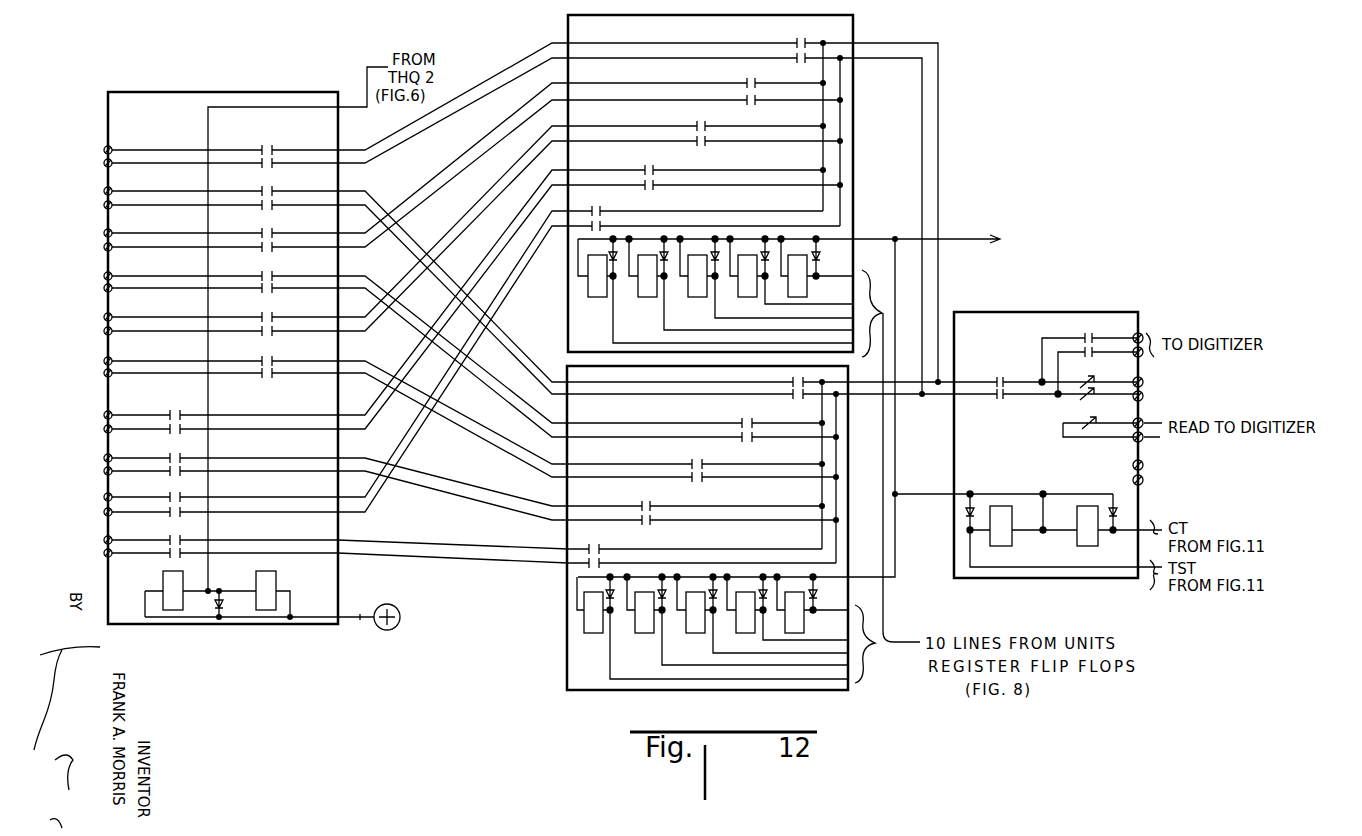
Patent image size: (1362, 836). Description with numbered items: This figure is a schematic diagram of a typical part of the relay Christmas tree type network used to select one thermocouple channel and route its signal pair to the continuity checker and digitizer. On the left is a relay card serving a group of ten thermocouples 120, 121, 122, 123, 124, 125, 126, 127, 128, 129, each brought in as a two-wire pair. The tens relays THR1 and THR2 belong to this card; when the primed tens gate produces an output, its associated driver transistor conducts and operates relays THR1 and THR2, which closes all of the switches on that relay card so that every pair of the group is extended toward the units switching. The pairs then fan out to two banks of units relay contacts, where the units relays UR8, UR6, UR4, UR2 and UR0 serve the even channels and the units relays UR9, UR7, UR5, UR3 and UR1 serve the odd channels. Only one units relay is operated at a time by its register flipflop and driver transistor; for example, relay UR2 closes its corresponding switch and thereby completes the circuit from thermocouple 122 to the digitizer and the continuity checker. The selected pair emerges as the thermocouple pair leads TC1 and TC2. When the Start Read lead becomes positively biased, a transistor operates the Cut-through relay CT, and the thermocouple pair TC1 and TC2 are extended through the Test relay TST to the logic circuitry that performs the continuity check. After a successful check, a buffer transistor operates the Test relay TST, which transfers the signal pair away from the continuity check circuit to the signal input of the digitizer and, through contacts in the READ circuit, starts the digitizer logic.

The thermocouple 120 is at (106, 152).
The thermocouple 121 is at (106, 195).
The thermocouple 122 is at (106, 237).
The thermocouple 123 is at (106, 280).
The thermocouple 124 is at (106, 321).
The thermocouple 125 is at (106, 365).
The thermocouple 126 is at (106, 419).
The thermocouple 127 is at (106, 462).
The thermocouple 128 is at (106, 502).
The thermocouple 129 is at (106, 545).
The units relay UR0 is at (797, 287).
The units relay UR1 is at (796, 620).
The relay UR2 is at (753, 303).
The units relay UR3 is at (751, 639).
The units relay UR4 is at (703, 305).
The units relay UR5 is at (701, 641).
The units relay UR6 is at (653, 305).
The units relay UR7 is at (650, 641).
The units relay UR8 is at (603, 305).
The units relay UR9 is at (599, 641).
The relay THR1 is at (162, 581).
The relay THR2 is at (260, 581).
The Cut-through relay CT is at (1022, 558).
The Test relay TST is at (1108, 558).
The thermocouple pair lead TC1 is at (1144, 382).
The thermocouple pair lead TC2 is at (1144, 396).